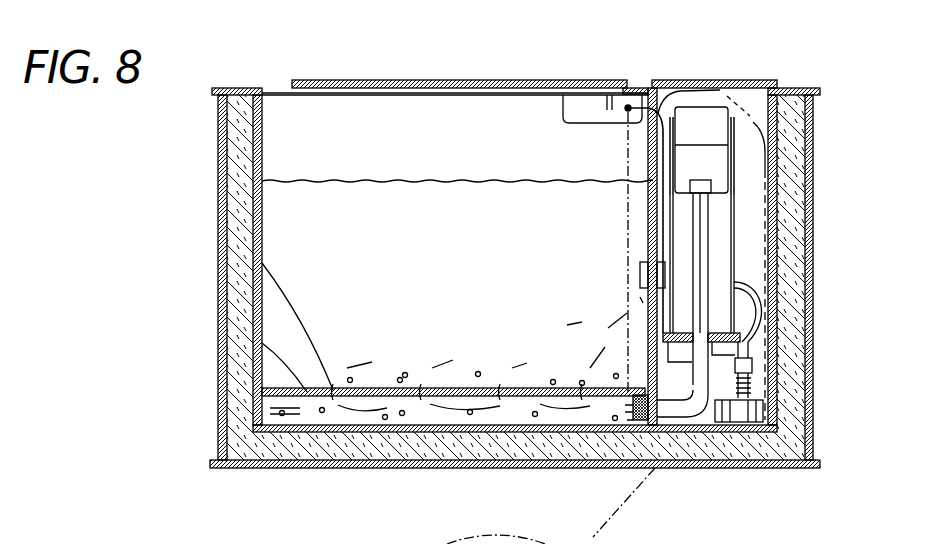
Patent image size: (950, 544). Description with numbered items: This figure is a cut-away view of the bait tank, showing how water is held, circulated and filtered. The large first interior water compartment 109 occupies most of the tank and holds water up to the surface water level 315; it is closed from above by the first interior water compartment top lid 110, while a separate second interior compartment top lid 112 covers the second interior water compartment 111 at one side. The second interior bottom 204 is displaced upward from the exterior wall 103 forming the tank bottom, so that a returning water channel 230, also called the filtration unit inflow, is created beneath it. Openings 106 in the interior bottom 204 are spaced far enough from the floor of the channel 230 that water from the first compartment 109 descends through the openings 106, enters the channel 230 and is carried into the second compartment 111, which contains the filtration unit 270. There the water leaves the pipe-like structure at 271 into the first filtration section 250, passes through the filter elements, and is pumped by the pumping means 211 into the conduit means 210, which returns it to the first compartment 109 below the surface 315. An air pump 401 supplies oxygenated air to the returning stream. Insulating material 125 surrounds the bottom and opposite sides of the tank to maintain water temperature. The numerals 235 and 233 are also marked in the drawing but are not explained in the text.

The openings 106 is at (218, 223).
The first interior water compartment top lid 110 is at (307, 82).
The surface water level 315 is at (378, 181).
The first interior water compartment 109 is at (415, 133).
The pumping means 211 is at (534, 357).
The conduit means 210 is at (640, 262).
The air pump 401 is at (607, 105).
The second interior compartment top lid 112 is at (700, 82).
The second interior water compartment 111 is at (752, 104).
The first filtration section 250 is at (720, 133).
The filtration unit 270 is at (718, 233).
The pipe outlet 271 is at (737, 350).
The second interior bottom 204 is at (218, 310).
The returning water channel 230 is at (220, 380).
The air outlet 235 is at (218, 402).
The insulation 233 is at (296, 449).
The insulating material 125 is at (280, 463).
The exterior wall 103 is at (350, 467).